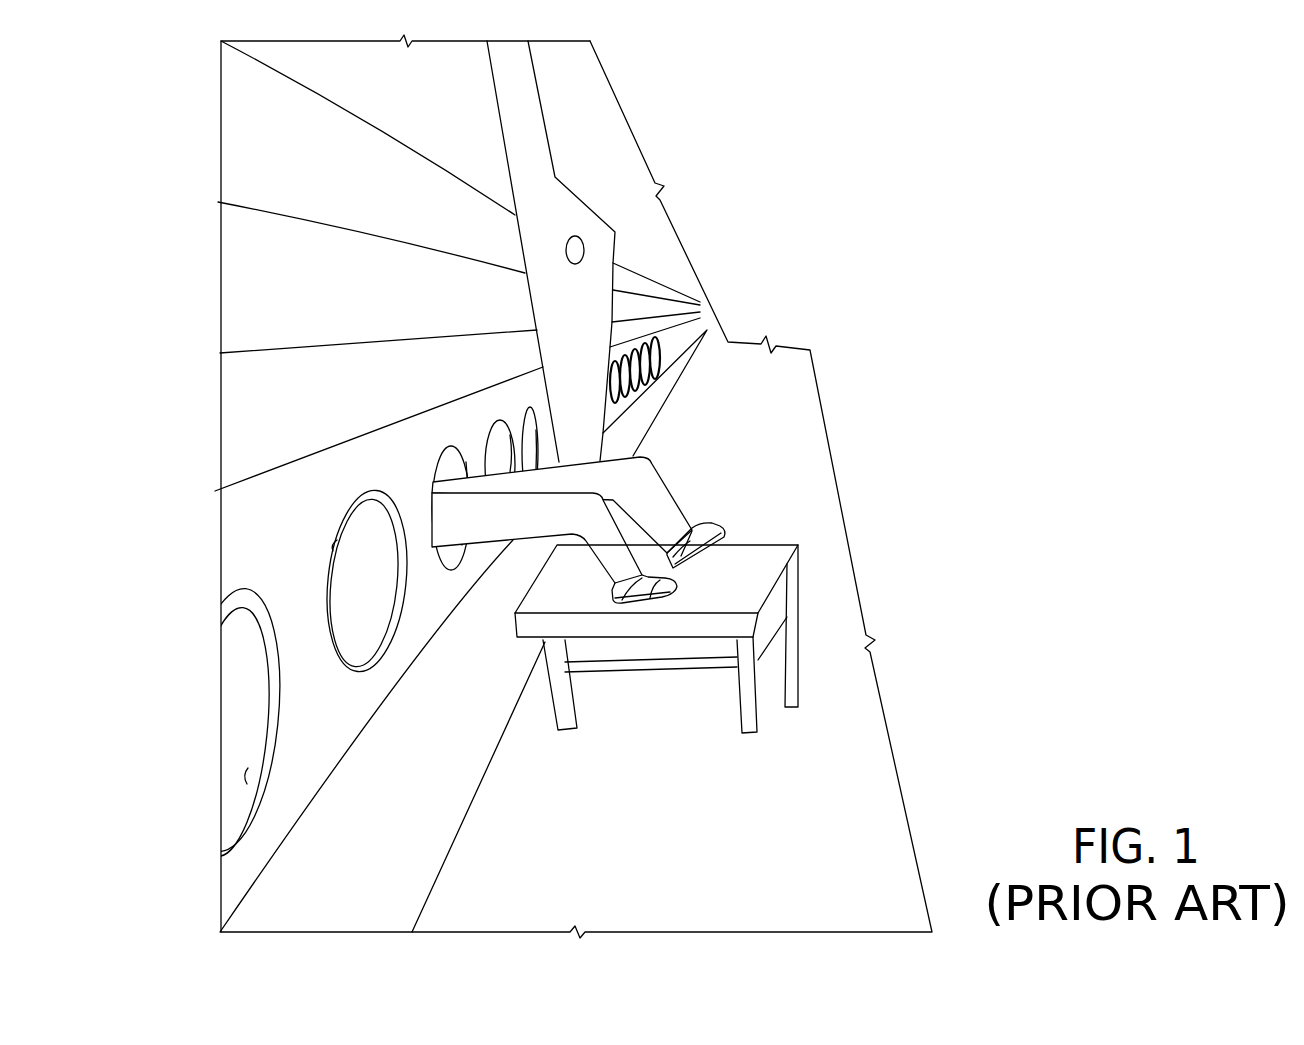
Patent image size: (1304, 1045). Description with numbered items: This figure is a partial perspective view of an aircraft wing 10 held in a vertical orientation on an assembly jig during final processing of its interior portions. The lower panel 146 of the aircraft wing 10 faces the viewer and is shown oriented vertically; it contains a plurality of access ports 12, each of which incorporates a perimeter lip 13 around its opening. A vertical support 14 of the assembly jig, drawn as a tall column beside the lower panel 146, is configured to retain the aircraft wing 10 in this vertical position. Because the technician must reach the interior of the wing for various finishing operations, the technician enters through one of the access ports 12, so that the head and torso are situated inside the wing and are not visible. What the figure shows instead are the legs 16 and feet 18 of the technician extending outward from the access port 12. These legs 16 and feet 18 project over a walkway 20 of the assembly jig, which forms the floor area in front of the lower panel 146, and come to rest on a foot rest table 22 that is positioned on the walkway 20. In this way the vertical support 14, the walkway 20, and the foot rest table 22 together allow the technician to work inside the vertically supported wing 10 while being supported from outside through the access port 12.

The aircraft wing 10 is at (252, 417).
The access ports 12 is at (528, 408).
The perimeter lip 13 is at (380, 653).
The vertical support 14 is at (572, 223).
The legs 16 is at (667, 512).
The feet 18 is at (717, 528).
The walkway 20 is at (852, 777).
The foot rest table 22 is at (793, 592).
The lower panel 146 is at (373, 301).